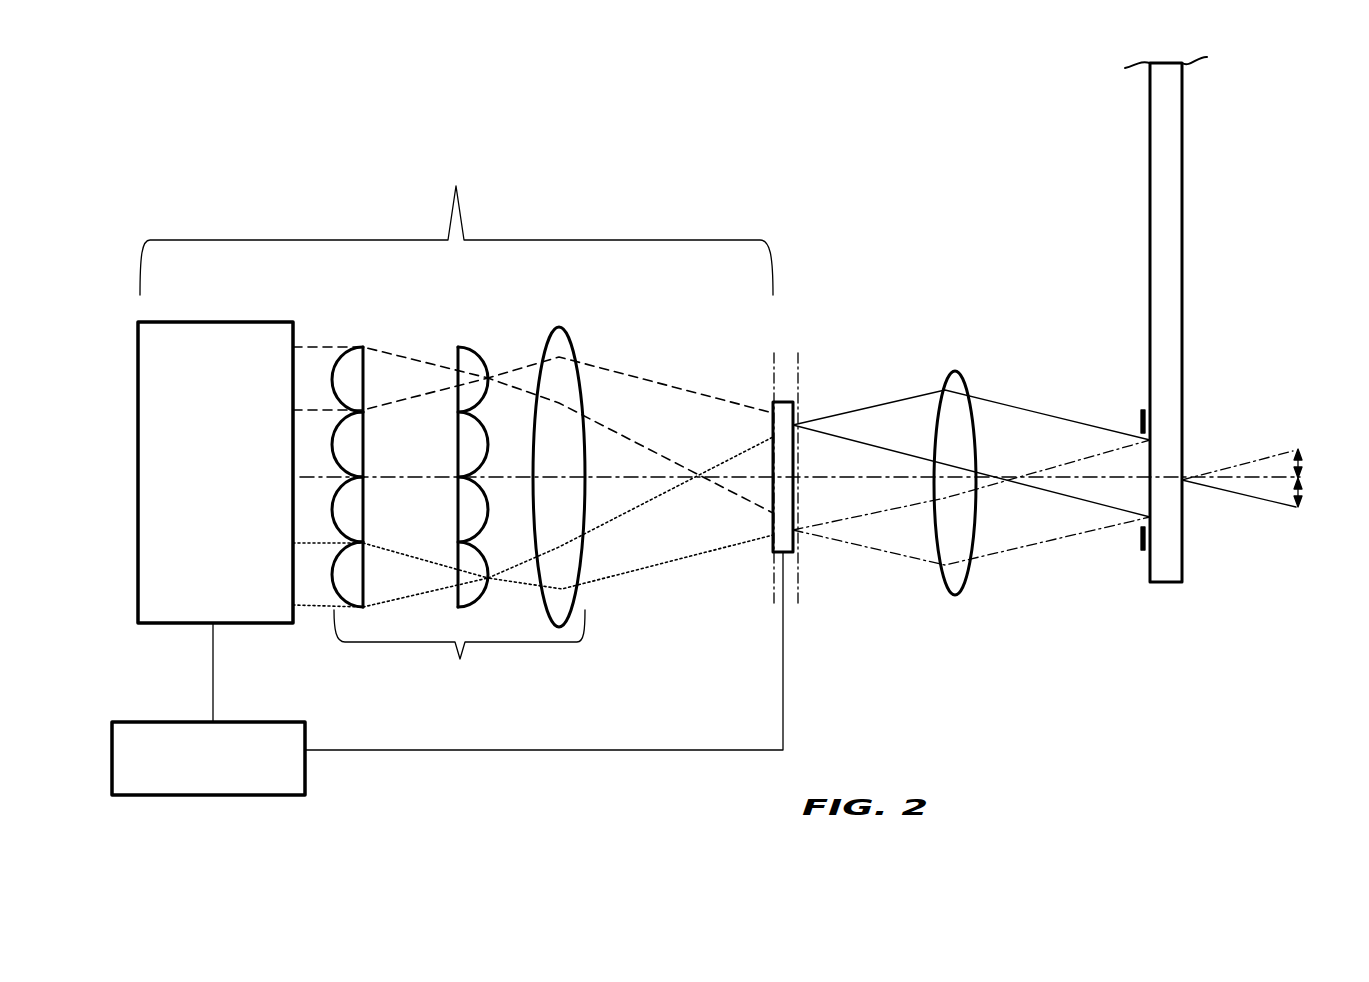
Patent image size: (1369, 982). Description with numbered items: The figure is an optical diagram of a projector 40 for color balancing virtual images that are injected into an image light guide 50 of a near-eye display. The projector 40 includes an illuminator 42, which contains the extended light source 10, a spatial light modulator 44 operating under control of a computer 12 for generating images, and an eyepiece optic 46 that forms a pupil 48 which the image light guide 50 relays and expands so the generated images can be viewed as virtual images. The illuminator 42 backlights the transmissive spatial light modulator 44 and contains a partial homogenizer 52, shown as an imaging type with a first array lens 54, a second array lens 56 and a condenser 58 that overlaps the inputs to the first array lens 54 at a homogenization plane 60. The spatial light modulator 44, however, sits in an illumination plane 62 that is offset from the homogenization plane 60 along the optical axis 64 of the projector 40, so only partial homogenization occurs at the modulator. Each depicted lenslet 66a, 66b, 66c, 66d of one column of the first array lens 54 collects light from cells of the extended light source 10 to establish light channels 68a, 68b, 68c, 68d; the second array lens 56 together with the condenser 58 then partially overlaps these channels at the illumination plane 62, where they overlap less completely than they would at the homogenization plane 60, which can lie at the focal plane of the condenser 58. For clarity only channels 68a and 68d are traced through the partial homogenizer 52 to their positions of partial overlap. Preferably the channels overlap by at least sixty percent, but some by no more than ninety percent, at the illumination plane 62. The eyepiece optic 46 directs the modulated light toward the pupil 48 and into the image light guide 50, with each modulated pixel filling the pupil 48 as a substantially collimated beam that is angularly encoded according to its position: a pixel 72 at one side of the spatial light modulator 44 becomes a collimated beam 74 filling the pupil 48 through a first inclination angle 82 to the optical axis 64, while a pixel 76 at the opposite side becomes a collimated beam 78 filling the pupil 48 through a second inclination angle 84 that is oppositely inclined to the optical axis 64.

The extended light source 10 is at (192, 490).
The computer 12 is at (181, 770).
The projector 40 is at (834, 182).
The illuminator 42 is at (456, 227).
The spatial light modulator 44 is at (785, 493).
The eyepiece optic 46 is at (955, 372).
The pupil 48 is at (1145, 513).
The image light guide 50 is at (1150, 193).
The partial homogenizer 52 is at (459, 656).
The first array lens 54 is at (391, 454).
The second array lens 56 is at (458, 347).
The condenser 58 is at (560, 329).
The homogenization plane 60 is at (798, 588).
The illumination plane 62 is at (773, 587).
The optical axis 64 is at (1236, 480).
The lenslet 66a is at (367, 375).
The lenslet 66b is at (367, 433).
The lenslet 66c is at (362, 524).
The lenslet 66d is at (365, 575).
The light channel 68a is at (305, 378).
The light channel 68b is at (305, 446).
The light channel 68c is at (305, 514).
The light channel 68d is at (305, 577).
The pixel 72 is at (793, 425).
The collimated beam 74 is at (1006, 450).
The pixel 76 is at (796, 533).
The collimated beam 78 is at (1006, 530).
The first inclination angle 82 is at (1300, 503).
The second inclination angle 84 is at (1300, 458).